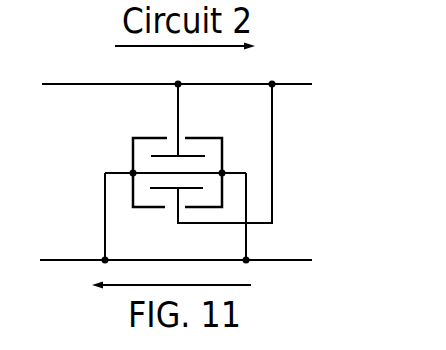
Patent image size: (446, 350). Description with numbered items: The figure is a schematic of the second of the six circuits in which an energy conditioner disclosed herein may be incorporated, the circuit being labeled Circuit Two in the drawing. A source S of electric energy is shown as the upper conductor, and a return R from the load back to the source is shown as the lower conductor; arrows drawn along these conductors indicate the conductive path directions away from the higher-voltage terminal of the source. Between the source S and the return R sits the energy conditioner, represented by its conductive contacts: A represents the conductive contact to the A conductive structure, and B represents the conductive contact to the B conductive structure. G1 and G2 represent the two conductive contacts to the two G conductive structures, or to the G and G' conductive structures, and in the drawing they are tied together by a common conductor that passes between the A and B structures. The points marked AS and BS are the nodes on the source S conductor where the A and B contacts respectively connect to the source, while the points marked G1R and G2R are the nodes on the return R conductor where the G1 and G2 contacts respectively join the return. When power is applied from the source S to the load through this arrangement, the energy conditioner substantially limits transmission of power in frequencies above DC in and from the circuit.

The source S is at (75, 83).
The return R is at (45, 260).
The node A source connection AS is at (181, 83).
The node B source connection BS is at (273, 82).
The conductive contact to the A conductive structure A is at (177, 128).
The conductive contact to the B conductive structure B is at (177, 202).
The conductive contact to the G conductive structure G1 is at (108, 173).
The conductive contact to the G conductive structure G2 is at (233, 172).
The gate 1 reference node G1R is at (103, 262).
The gate 2 reference node G2R is at (248, 261).